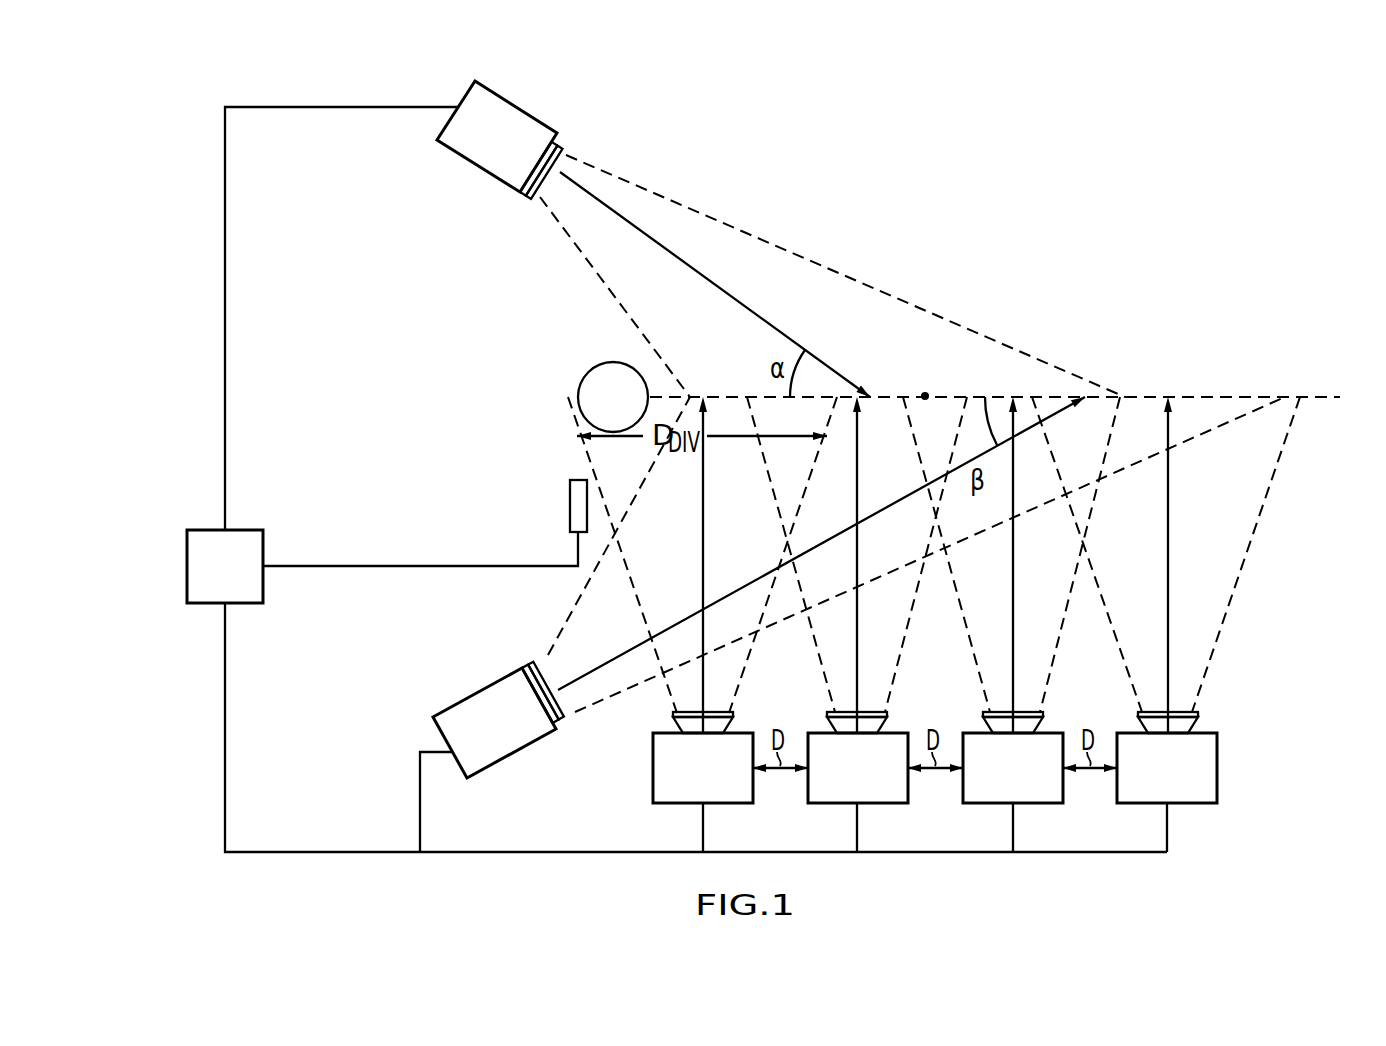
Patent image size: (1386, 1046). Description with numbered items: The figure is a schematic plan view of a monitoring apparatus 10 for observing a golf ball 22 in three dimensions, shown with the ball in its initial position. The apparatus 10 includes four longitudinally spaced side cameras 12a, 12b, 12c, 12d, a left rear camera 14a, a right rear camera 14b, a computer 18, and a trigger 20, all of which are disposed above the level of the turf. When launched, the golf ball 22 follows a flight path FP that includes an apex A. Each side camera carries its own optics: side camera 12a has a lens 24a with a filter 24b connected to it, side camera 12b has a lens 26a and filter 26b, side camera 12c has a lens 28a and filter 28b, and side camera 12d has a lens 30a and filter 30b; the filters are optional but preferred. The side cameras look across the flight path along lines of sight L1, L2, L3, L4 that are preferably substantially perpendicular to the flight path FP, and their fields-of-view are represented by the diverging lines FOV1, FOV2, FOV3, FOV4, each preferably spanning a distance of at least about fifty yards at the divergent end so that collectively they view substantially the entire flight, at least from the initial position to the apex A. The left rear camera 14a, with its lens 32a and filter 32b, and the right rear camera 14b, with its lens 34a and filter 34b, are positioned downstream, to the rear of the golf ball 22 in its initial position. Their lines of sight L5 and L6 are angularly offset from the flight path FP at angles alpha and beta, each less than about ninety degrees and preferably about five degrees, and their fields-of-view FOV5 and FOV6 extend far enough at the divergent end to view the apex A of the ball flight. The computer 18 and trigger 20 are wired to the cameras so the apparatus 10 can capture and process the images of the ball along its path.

The monitoring apparatus 10 is at (985, 160).
The side camera 12a is at (650, 805).
The side camera 12b is at (805, 805).
The side camera 12c is at (960, 805).
The side camera 12d is at (1205, 805).
The left rear camera 14a is at (515, 107).
The right rear camera 14b is at (477, 692).
The computer 18 is at (187, 566).
The trigger 20 is at (570, 505).
The golf ball 22 is at (590, 372).
The lens 24a is at (720, 730).
The filter 24b is at (723, 712).
The lens 26a is at (878, 730).
The filter 26b is at (878, 712).
The lens 28a is at (1035, 728).
The filter 28b is at (1035, 716).
The lens 30a is at (1187, 715).
The filter 30b is at (1190, 712).
The lens 32a is at (557, 147).
The filter 32b is at (575, 156).
The lens 34a is at (553, 732).
The filter 34b is at (570, 716).
The flight path FP is at (1182, 393).
The apex A is at (925, 396).
The line of sight L1 is at (705, 520).
The line of sight L2 is at (858, 458).
The line of sight L3 is at (1016, 580).
The line of sight L4 is at (1170, 522).
The line of sight L5 is at (735, 298).
The line of sight L6 is at (1048, 420).
The field-of-view FOV1 is at (627, 567).
The field-of-view FOV2 is at (905, 608).
The field-of-view FOV3 is at (1059, 638).
The field-of-view FOV4 is at (1238, 578).
The field-of-view FOV5 is at (775, 243).
The field-of-view FOV6 is at (548, 640).